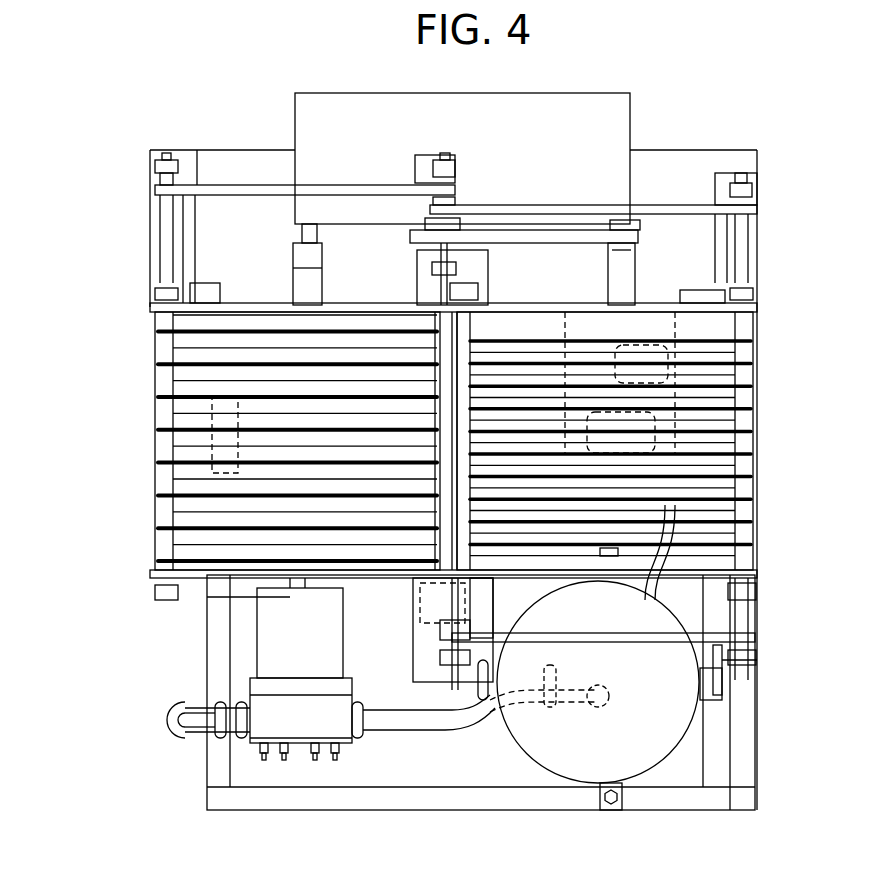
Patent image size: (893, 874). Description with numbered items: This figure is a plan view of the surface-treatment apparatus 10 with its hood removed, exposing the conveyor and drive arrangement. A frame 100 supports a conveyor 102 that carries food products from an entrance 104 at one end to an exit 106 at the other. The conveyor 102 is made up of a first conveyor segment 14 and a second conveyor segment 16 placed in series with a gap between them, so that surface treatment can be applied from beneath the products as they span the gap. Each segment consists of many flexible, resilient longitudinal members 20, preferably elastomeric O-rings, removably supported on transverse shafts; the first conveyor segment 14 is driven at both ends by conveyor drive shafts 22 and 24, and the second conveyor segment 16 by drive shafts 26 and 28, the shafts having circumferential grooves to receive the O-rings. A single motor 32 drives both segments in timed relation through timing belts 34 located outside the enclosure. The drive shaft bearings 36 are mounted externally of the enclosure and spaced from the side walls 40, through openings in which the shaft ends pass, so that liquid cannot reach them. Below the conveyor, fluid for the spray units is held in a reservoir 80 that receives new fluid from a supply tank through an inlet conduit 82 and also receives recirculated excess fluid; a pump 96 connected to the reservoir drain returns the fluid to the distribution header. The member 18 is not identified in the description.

The apparatus 10 is at (122, 634).
The first conveyor segment 14 is at (142, 515).
The second conveyor segment 16 is at (775, 492).
The central column 18 is at (470, 326).
The longitudinal members 20 is at (155, 388).
The conveyor drive shaft 22 is at (165, 565).
The conveyor drive shaft 24 is at (418, 318).
The drive shaft 26 is at (480, 313).
The drive shaft 28 is at (742, 552).
The motor 32 is at (675, 320).
The timing belts 34 is at (340, 186).
The bearings 36 is at (155, 292).
The side walls 40 is at (266, 305).
The reservoir 80 is at (650, 733).
The inlet conduit 82 is at (722, 683).
The pump 96 is at (309, 633).
The frame 100 is at (328, 812).
The conveyor 102 is at (150, 342).
The entrance 104 is at (142, 464).
The exit 106 is at (775, 400).